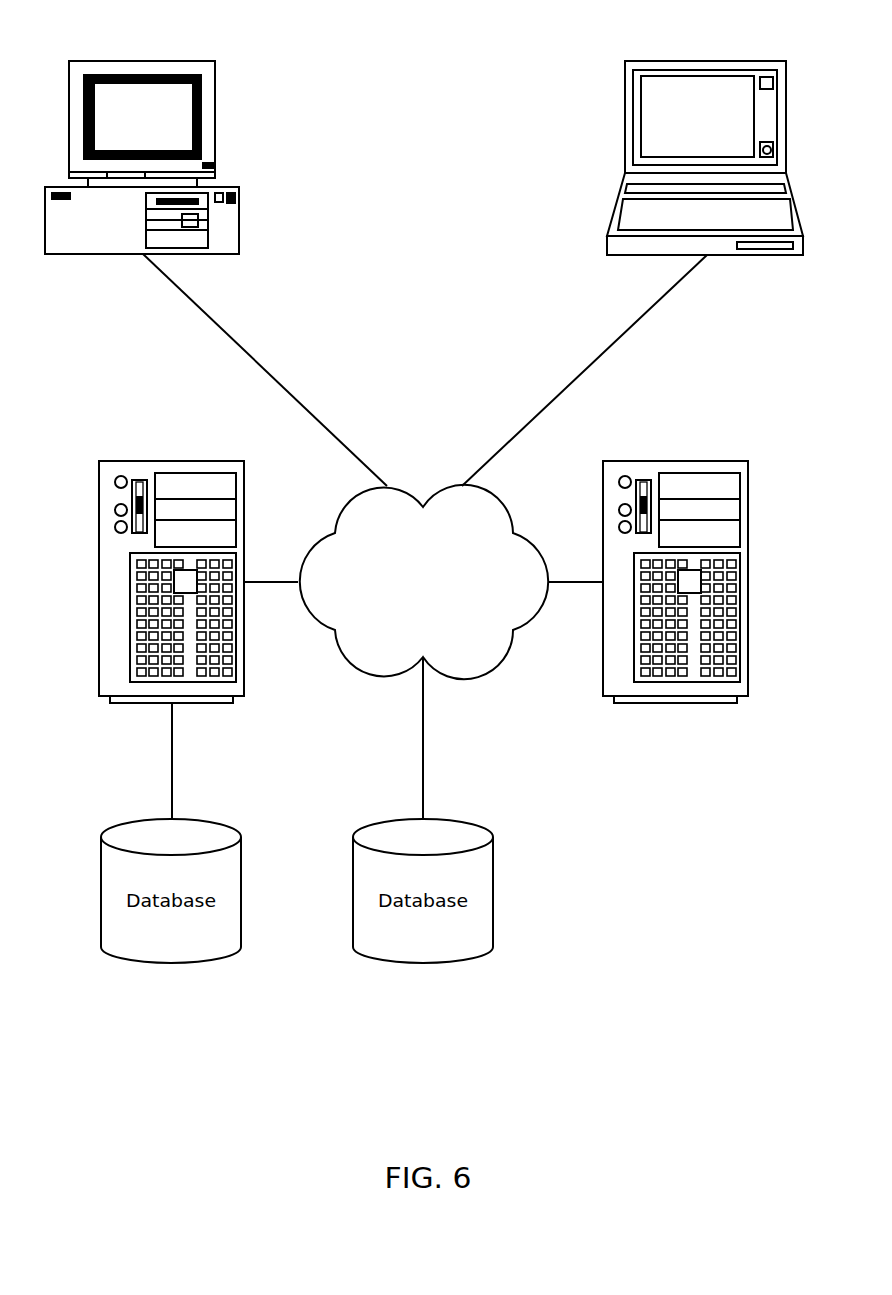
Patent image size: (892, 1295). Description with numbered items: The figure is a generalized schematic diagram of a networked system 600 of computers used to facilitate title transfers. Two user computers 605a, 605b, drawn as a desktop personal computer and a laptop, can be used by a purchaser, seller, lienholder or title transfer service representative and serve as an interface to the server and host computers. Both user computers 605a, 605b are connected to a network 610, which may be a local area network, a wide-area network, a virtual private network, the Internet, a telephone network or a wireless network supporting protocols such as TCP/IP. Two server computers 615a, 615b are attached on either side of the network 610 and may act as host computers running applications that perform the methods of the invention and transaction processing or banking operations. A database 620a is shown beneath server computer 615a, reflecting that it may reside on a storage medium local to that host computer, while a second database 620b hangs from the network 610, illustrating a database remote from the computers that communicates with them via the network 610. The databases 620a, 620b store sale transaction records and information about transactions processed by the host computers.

The system 600 is at (675, 1084).
The user computer 605a is at (242, 205).
The user computer 605b is at (625, 157).
The network 610 is at (460, 680).
The server computer 615a is at (99, 583).
The server computer 615b is at (748, 583).
The database 620a is at (172, 963).
The database 620b is at (423, 963).